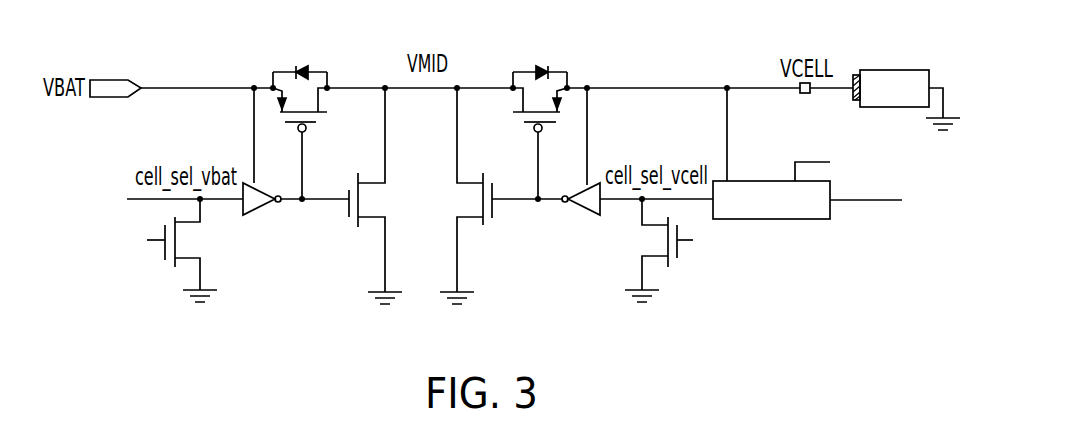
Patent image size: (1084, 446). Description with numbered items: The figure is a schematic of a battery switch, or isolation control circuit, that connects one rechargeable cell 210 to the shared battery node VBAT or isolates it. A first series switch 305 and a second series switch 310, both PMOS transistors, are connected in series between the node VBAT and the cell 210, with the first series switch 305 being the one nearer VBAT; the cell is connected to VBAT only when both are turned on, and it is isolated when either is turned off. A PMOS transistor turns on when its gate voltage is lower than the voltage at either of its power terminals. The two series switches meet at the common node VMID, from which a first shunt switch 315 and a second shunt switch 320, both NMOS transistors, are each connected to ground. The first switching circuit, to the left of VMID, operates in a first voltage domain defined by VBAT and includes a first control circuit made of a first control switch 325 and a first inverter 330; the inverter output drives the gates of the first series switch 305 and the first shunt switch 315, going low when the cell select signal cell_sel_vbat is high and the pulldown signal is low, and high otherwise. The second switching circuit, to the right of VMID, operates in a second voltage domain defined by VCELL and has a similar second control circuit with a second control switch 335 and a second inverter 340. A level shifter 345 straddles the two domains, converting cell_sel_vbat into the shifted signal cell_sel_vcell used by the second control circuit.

The cell 210 is at (886, 70).
The first series switch 305 is at (325, 100).
The second series switch 310 is at (515, 100).
The first shunt switch 315 is at (365, 228).
The second shunt switch 320 is at (478, 228).
The first control switch 325 is at (178, 270).
The first inverter 330 is at (255, 215).
The second control switch 335 is at (660, 270).
The second inverter 340 is at (590, 215).
The level shifter 345 is at (808, 219).